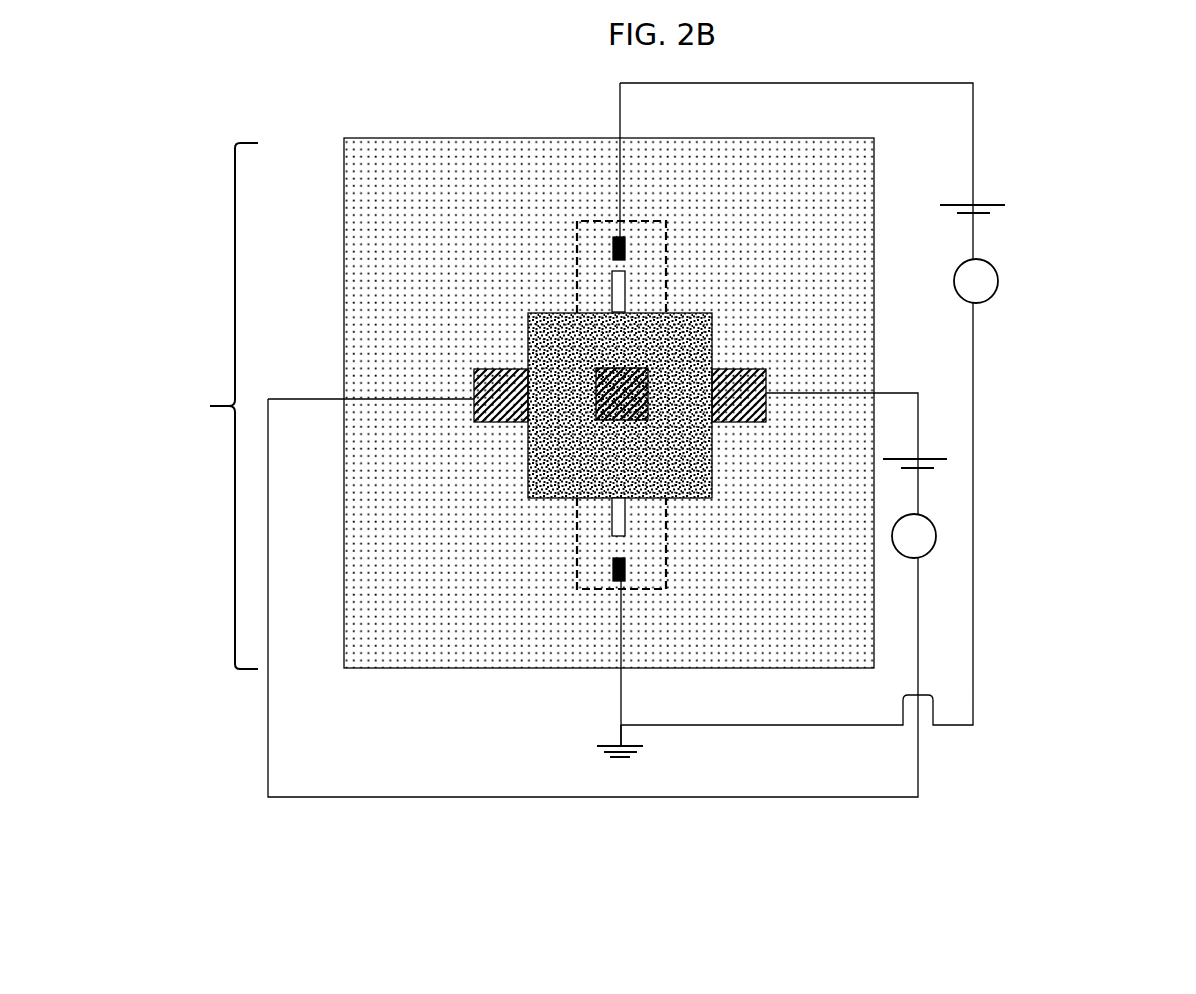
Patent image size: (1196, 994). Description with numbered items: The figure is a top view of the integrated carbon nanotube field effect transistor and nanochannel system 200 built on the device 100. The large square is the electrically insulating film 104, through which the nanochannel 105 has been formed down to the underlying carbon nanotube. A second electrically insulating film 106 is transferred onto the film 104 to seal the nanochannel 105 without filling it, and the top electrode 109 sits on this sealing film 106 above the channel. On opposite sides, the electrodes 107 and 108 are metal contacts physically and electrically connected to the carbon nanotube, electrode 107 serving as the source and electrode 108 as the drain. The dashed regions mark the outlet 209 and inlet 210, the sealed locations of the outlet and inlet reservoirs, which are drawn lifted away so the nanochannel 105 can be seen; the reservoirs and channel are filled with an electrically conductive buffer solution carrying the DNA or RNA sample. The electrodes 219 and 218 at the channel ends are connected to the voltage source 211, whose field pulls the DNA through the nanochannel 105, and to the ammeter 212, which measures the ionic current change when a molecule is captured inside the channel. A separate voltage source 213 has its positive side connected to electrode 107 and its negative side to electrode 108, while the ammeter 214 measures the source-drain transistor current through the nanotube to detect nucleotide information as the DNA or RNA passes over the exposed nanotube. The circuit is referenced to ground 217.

The device 100 is at (205, 406).
The electrically insulating film 104 is at (362, 157).
The nanochannel 105 is at (620, 524).
The electrically insulating film 106 is at (690, 323).
The electrode 107 is at (752, 392).
The electrode 108 is at (498, 378).
The top electrode 109 is at (617, 417).
The integrated carbon nanotube field effect transistor and nanochannel system 200 is at (276, 92).
The outlet 209 is at (570, 254).
The inlet 210 is at (575, 549).
The voltage source 211 is at (1008, 213).
The ammeter 212 is at (1001, 281).
The voltage source 213 is at (950, 468).
The ammeter 214 is at (938, 536).
The ground 217 is at (645, 746).
The electrode 218 is at (613, 573).
The electrode 219 is at (613, 238).